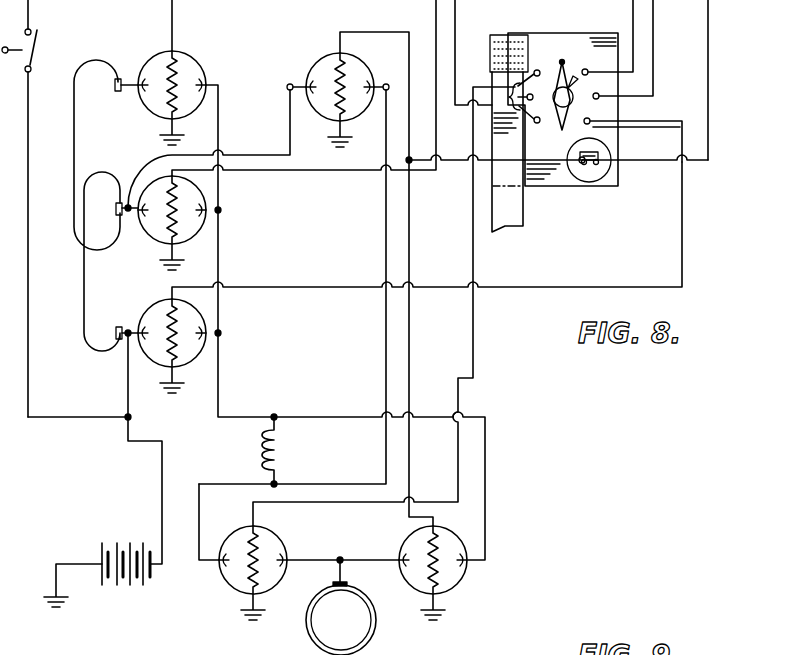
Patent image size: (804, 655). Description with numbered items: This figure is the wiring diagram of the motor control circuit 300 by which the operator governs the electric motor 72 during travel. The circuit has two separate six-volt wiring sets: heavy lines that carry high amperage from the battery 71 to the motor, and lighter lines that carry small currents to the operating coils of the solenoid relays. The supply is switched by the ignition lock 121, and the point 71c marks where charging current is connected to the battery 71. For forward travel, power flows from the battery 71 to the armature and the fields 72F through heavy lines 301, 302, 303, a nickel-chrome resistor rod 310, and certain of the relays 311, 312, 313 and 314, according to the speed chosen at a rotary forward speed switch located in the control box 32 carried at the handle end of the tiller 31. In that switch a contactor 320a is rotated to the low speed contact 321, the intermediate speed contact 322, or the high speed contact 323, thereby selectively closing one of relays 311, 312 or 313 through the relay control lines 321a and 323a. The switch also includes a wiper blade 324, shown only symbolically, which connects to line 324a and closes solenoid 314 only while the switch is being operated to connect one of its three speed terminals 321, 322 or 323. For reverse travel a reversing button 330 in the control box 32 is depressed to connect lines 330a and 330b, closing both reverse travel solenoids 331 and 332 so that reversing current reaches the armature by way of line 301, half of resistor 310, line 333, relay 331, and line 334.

The motor control circuit 300 is at (371, 327).
The ignition lock 121 is at (38, 33).
The storage batteries 71 is at (125, 583).
The battery charging connection point 71c is at (126, 418).
The heavy line 301 is at (153, 441).
The heavy line 302 is at (222, 383).
The heavy line 303 is at (330, 554).
The nickel-chrome resistor rod 310 is at (84, 314).
The relay 311 is at (200, 72).
The relay 312 is at (205, 202).
The relay 313 is at (205, 320).
The solenoid relay 314 is at (278, 535).
The reverse travel solenoid 331 is at (366, 67).
The reverse travel solenoid 332 is at (457, 540).
The line 333 is at (266, 144).
The line 334 is at (386, 258).
The electric motor 72 is at (365, 637).
The motor fields 72F is at (267, 457).
The tiller 31 is at (498, 230).
The electrical control box 32 is at (573, 187).
The contactor 320a is at (578, 80).
The low speed contact 321 is at (590, 72).
The relay control line 321a is at (602, 12).
The intermediate speed contact 322 is at (620, 100).
The high speed contact 323 is at (688, 125).
The relay control line 323a is at (683, 224).
The wiper blade 324 is at (616, 66).
The line 324a is at (473, 289).
The reversing button 330 is at (618, 132).
The line 330a is at (455, 168).
The line 330b is at (670, 166).